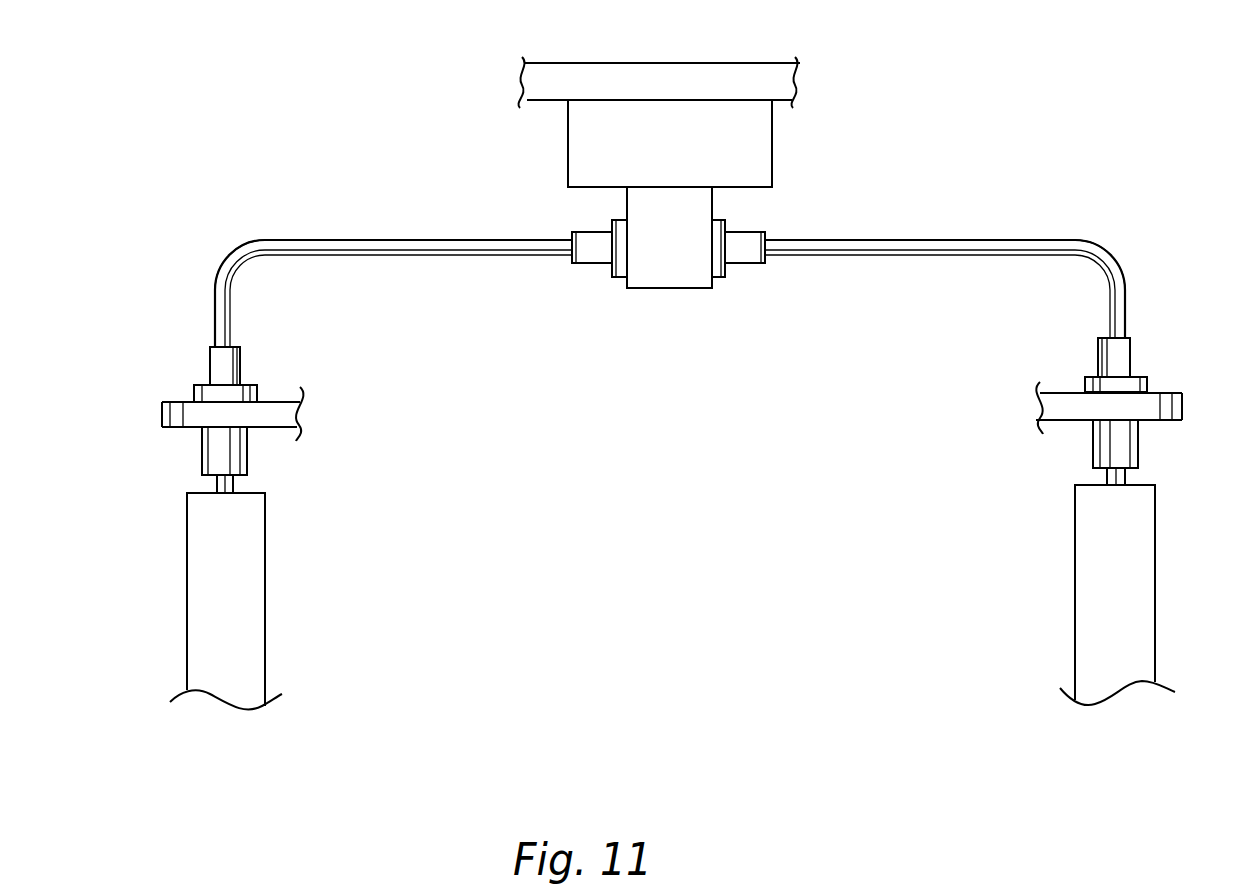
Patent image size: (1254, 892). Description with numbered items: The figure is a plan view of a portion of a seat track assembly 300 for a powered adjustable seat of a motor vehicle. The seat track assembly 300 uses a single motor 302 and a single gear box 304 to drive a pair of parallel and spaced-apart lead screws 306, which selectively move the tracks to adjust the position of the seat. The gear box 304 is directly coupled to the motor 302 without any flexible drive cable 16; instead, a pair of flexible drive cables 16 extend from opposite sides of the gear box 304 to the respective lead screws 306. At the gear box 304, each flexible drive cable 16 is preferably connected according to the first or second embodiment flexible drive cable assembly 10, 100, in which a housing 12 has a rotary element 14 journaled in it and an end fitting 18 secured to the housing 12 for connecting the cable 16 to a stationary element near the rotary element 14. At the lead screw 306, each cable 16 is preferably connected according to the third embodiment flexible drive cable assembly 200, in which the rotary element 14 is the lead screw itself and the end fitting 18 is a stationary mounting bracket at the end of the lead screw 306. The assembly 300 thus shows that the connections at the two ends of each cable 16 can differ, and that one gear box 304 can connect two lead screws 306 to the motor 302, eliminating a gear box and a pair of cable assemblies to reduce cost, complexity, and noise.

The flexible drive cable assembly 10 is at (572, 258).
The flexible drive cable assembly 100 is at (668, 247).
The housing 12 is at (568, 140).
The rotary element 14 is at (266, 530).
The flexible drive cable 16 is at (347, 257).
The end fitting 18 is at (600, 264).
The flexible drive cable assembly 200 is at (206, 379).
The seat track assembly 300 is at (745, 714).
The motor 302 is at (776, 145).
The gear box 304 is at (661, 288).
The lead screw 306 is at (265, 597).